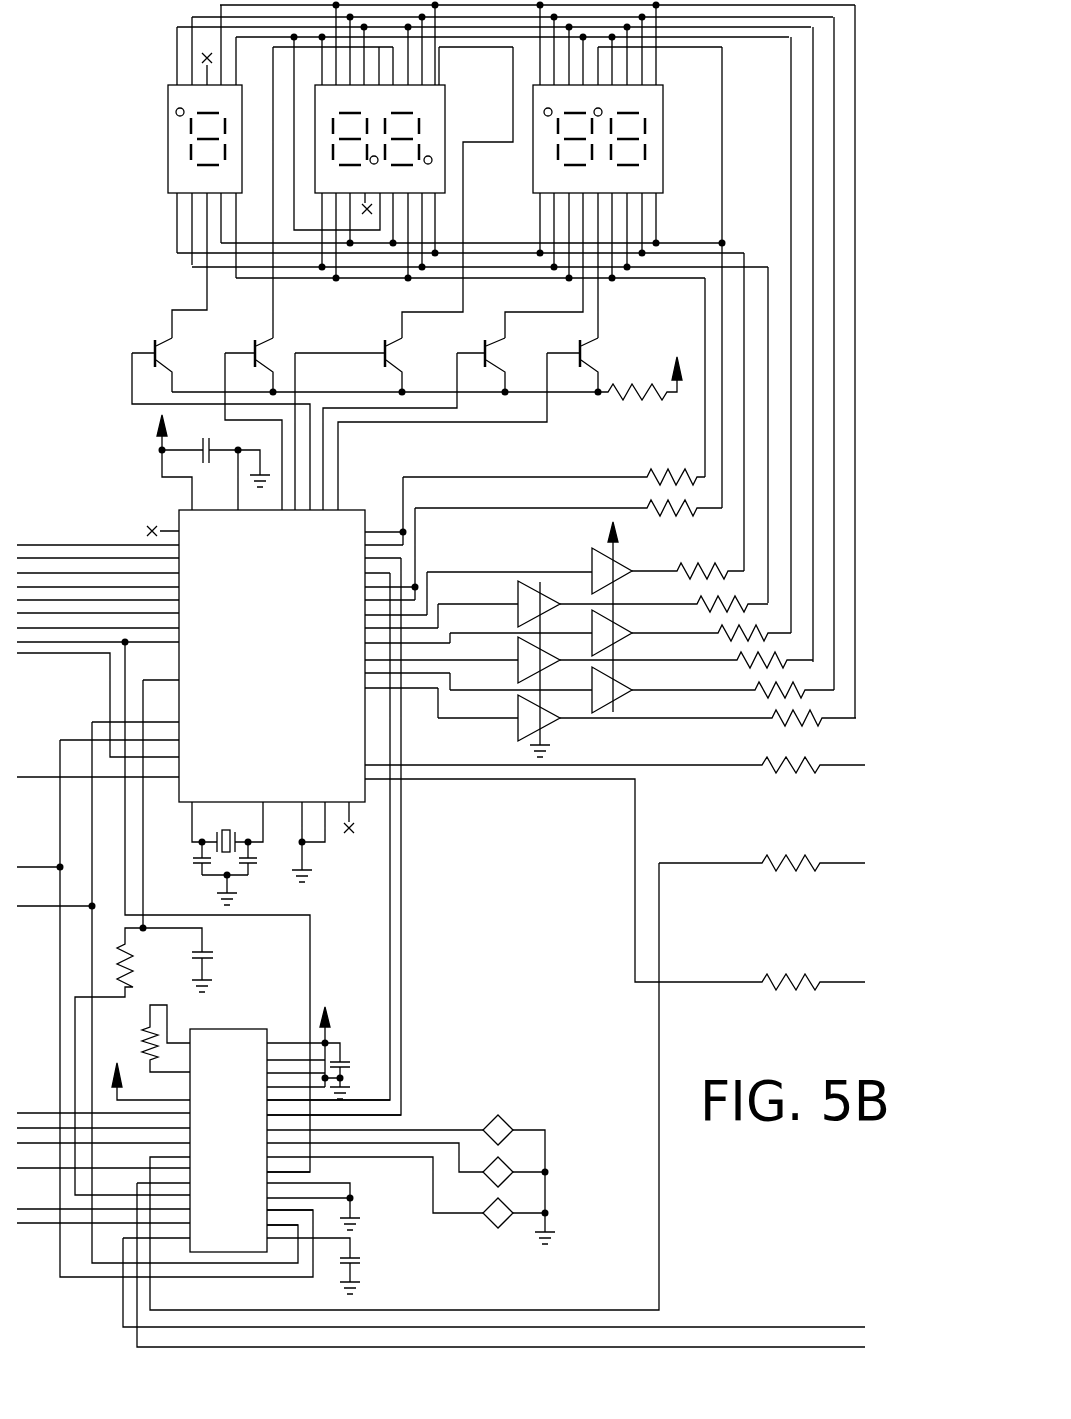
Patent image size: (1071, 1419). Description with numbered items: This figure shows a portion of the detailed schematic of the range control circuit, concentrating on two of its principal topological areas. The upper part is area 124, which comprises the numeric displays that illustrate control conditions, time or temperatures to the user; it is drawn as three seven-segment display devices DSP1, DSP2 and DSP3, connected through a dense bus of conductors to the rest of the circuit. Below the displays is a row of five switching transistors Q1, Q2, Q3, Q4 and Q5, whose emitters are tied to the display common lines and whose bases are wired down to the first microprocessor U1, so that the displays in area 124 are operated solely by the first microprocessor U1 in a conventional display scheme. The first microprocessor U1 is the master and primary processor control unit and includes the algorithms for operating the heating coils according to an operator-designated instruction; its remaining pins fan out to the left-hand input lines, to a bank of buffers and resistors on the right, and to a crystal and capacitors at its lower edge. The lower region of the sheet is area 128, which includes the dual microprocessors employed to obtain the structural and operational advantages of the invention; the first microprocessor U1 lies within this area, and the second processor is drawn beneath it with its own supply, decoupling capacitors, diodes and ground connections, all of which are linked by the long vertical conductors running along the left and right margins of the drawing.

The area 124 is at (145, 82).
The area 128 is at (432, 892).
The seven-segment display DSP1 is at (445, 112).
The seven-segment display DSP2 is at (533, 158).
The seven-segment display DSP3 is at (168, 134).
The transistor Q1 is at (160, 346).
The transistor Q2 is at (260, 346).
The transistor Q3 is at (390, 346).
The transistor Q4 is at (490, 346).
The transistor Q5 is at (585, 346).
The first microprocessor U1 is at (272, 656).